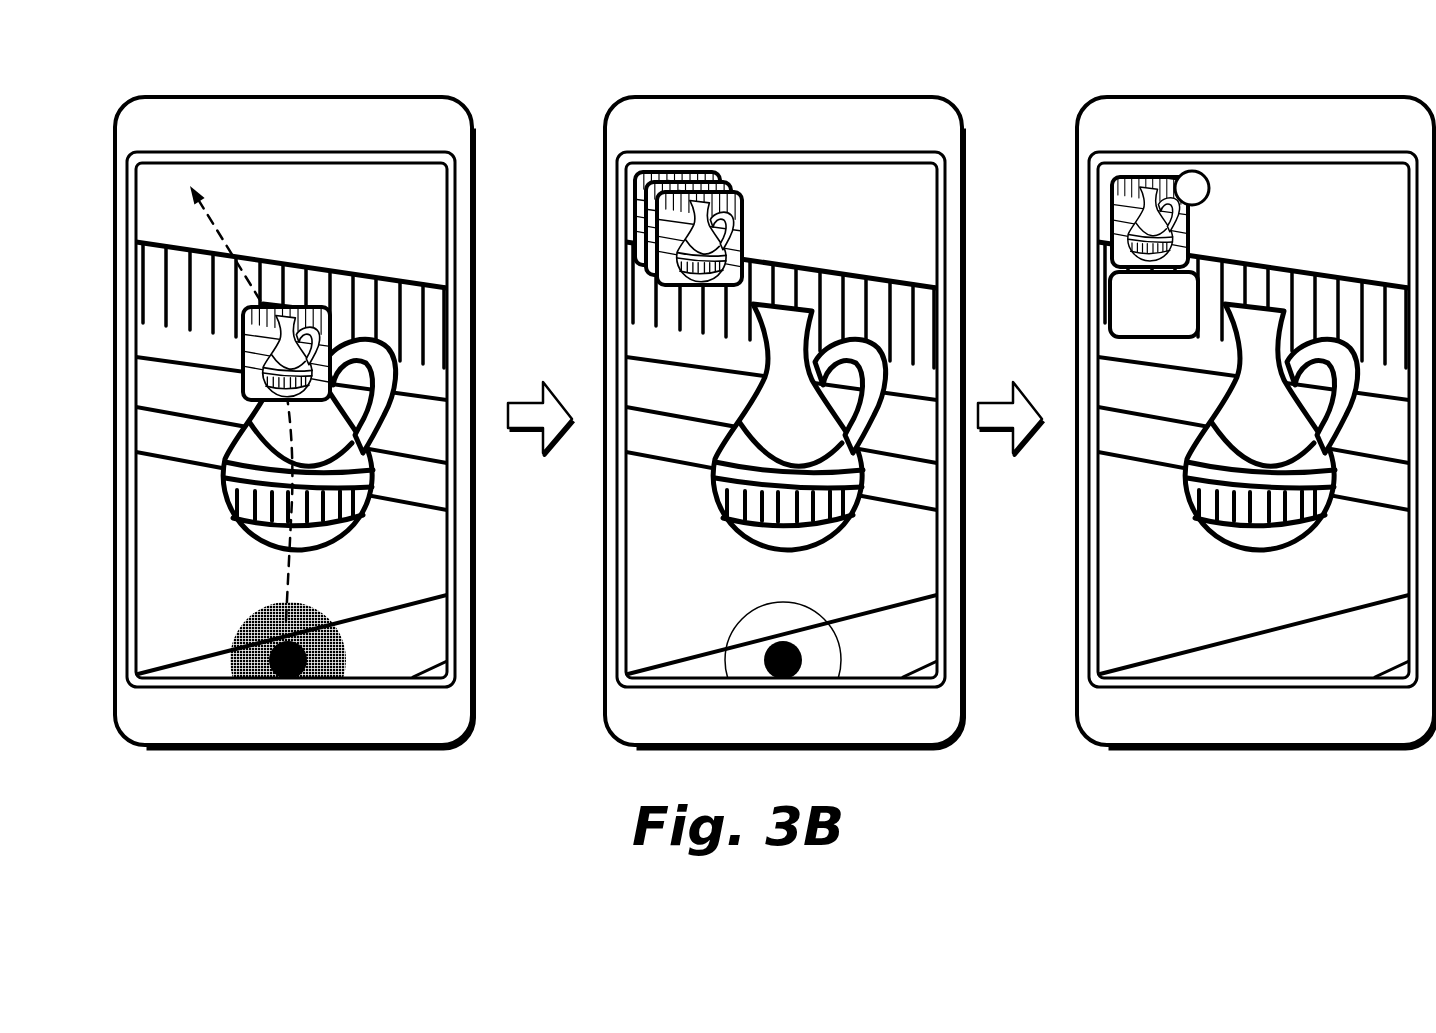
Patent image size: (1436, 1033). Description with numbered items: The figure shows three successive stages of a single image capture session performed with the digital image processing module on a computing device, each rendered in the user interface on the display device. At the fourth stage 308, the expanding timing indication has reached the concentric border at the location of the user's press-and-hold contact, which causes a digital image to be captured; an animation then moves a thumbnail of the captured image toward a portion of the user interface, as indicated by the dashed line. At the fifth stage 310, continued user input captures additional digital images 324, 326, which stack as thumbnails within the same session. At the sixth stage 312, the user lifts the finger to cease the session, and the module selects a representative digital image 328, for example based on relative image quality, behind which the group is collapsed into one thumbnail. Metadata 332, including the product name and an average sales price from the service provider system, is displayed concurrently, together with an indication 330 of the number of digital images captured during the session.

The fourth stage 308 is at (138, 78).
The fifth stage 310 is at (628, 78).
The sixth stage 312 is at (1123, 85).
The additional digital image 324 is at (717, 190).
The additional digital image 326 is at (743, 225).
The representative digital image 328 is at (1130, 177).
The indication 330 is at (1202, 203).
The metadata 332 is at (1155, 338).